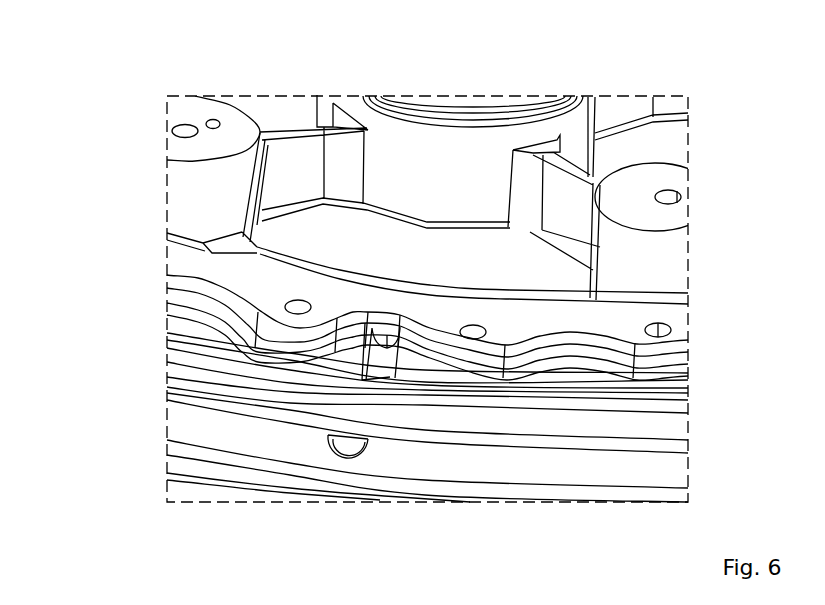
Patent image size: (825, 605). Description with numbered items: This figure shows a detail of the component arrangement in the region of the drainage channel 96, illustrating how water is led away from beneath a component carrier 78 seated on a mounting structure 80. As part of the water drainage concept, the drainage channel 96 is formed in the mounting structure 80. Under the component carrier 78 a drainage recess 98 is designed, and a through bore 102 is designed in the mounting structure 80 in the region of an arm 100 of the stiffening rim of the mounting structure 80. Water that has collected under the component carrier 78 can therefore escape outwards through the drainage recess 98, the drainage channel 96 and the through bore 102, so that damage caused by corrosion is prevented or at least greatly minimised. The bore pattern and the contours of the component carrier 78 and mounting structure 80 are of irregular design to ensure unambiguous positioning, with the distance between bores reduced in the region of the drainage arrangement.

The component carrier 78 is at (448, 250).
The mounting structure 80 is at (187, 375).
The drainage channel 96 is at (404, 377).
The drainage recess 98 is at (388, 338).
The arm 100 is at (580, 470).
The through bore 102 is at (372, 468).